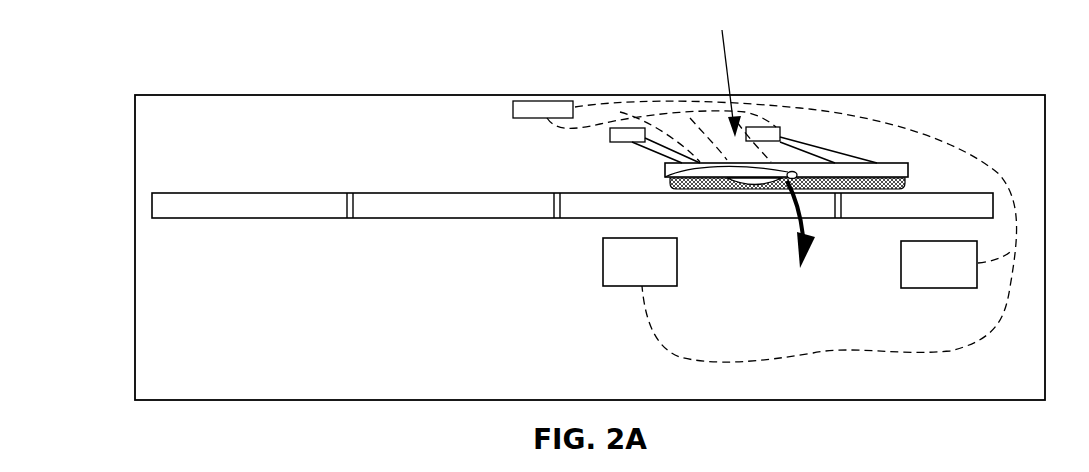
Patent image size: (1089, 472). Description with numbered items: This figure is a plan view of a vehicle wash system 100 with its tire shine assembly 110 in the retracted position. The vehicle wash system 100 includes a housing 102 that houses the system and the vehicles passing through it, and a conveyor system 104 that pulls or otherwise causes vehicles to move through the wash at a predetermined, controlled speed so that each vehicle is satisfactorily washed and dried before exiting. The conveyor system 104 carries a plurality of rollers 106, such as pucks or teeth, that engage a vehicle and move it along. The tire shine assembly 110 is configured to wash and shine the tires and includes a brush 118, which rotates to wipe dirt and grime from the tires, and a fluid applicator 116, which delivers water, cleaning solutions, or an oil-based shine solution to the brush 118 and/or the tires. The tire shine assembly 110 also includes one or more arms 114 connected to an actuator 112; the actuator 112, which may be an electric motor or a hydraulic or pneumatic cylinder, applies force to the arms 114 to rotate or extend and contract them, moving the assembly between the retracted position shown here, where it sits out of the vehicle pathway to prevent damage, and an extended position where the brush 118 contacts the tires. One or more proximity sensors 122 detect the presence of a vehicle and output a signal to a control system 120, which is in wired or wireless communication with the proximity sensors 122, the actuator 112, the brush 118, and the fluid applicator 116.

The vehicle wash system 100 is at (146, 44).
The housing 102 is at (290, 95).
The conveyor system 104 is at (442, 193).
The rollers 106 is at (348, 193).
The tire shine assembly 110 is at (695, 81).
The actuator 112 is at (630, 128).
The arms 114 is at (690, 157).
The fluid applicator 116 is at (665, 169).
The brush 118 is at (878, 163).
The control system 120 is at (543, 101).
The proximity sensors 122 is at (620, 286).